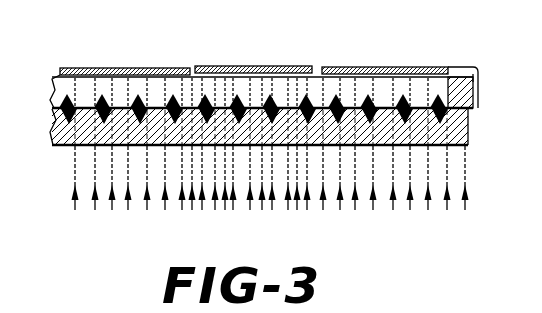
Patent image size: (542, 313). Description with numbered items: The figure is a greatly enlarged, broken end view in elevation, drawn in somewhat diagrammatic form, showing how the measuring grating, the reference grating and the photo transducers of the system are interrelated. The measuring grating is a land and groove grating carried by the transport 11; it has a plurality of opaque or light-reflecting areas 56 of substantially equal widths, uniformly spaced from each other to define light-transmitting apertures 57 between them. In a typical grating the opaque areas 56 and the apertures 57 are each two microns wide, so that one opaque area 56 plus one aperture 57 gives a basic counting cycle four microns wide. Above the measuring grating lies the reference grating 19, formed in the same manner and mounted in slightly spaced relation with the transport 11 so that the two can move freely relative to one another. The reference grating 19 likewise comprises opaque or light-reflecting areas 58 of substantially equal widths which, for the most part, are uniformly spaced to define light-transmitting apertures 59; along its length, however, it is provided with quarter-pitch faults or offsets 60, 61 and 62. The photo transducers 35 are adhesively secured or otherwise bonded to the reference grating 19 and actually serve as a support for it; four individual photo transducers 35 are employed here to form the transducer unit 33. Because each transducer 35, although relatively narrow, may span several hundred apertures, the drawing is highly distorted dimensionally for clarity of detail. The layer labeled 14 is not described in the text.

The transport 11 is at (470, 139).
The light transmitting plate 14 is at (472, 121).
The reference grating 19 is at (473, 92).
The transducer unit 33 is at (343, 61).
The photo transducers 35 is at (443, 70).
The opaque or light-reflecting areas 56 is at (56, 128).
The light-transmitting apertures 57 is at (74, 118).
The opaque or light-reflecting areas 58 is at (60, 102).
The light-transmitting apertures 59 is at (88, 98).
The quarter-pitch fault or offset 60 is at (191, 103).
The quarter-pitch fault or offset 61 is at (314, 102).
The quarter-pitch fault or offset 62 is at (447, 100).